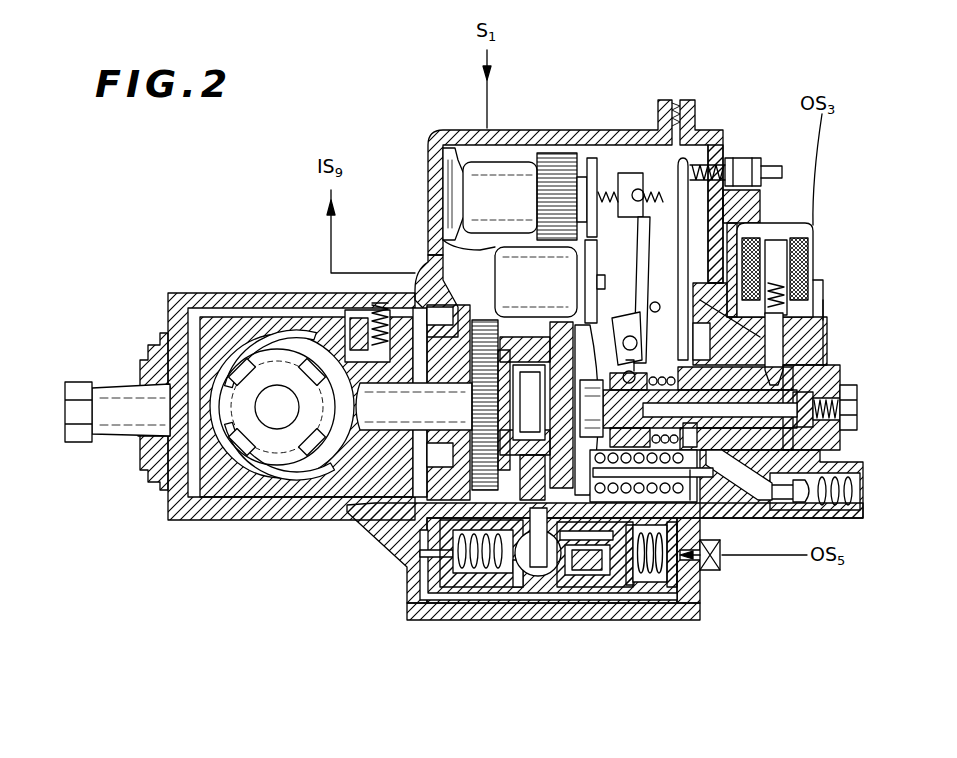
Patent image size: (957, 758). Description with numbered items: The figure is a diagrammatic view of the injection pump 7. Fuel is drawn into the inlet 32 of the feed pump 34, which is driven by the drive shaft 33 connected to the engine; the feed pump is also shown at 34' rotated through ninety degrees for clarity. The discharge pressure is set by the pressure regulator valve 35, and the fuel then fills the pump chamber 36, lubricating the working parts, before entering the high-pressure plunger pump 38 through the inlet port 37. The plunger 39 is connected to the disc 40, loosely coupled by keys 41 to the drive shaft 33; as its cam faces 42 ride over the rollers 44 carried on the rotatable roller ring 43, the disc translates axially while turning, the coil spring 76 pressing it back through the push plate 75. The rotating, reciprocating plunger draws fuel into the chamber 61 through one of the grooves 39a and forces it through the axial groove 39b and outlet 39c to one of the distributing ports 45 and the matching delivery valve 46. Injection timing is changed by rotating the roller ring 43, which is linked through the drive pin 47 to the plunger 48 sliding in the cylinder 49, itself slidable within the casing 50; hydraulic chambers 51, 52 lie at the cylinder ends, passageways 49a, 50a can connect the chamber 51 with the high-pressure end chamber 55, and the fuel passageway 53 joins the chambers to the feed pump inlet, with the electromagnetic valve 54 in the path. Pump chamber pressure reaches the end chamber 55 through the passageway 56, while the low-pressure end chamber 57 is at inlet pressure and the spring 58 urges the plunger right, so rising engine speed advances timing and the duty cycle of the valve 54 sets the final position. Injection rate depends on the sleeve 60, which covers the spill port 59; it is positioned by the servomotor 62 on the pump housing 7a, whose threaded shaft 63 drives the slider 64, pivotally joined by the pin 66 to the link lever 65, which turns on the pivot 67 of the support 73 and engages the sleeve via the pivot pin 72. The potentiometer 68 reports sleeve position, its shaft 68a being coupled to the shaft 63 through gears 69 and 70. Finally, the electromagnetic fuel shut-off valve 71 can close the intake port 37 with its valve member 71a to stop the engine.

The injection pump 7 is at (428, 115).
The pump housing 7a is at (428, 214).
The inlet 32 is at (195, 296).
The drive shaft 33 is at (118, 414).
The feed pump 34 is at (282, 451).
The feed pump rotated through 90 degrees 34' is at (276, 355).
The pressure regulator valve 35 is at (370, 318).
The pump chamber 36 is at (637, 156).
The inlet port 37 is at (828, 334).
The high-pressure plunger pump 38 is at (852, 381).
The plunger 39 is at (840, 450).
The grooves 39a is at (845, 368).
The axial groove 39b is at (762, 330).
The outlet 39c is at (778, 292).
The disc 40 is at (545, 398).
The keys 41 is at (528, 372).
The cam faces 42 is at (565, 332).
The roller ring 43 is at (498, 332).
The rollers 44 is at (390, 526).
The distributing ports 45 is at (745, 470).
The delivery valve 46 is at (858, 495).
The drive pin 47 is at (547, 596).
The plunger 48 is at (583, 608).
The cylinder 49 is at (512, 604).
The passageway 49a is at (628, 600).
The casing 50 is at (493, 612).
The passageway 50a is at (638, 612).
The hydraulic chamber 51 is at (664, 622).
The hydraulic chamber 52 is at (425, 622).
The fuel passageway 53 is at (700, 592).
The electromagnetic valve 54 is at (720, 570).
The high-pressure end chamber 55 is at (702, 617).
The passageway 56 is at (556, 578).
The low-pressure end chamber 57 is at (466, 598).
The spring 58 is at (415, 556).
The spill port 59 is at (688, 408).
The sleeve 60 is at (655, 370).
The chamber 61 is at (838, 424).
The servomotor 62 is at (553, 162).
The threaded shaft 63 is at (582, 176).
The slider 64 is at (622, 172).
The link lever 65 is at (642, 216).
The pin 66 is at (643, 222).
The pivot 67 is at (628, 336).
The potentiometer 68 is at (495, 262).
The shaft 68a is at (575, 282).
The gear 69 is at (597, 226).
The gear 70 is at (597, 262).
The electromagnetic fuel shut-off valve 71 is at (815, 258).
The valve member 71a is at (824, 302).
The pivot pin 72 is at (623, 378).
The support 73 is at (605, 284).
The push plate 75 is at (605, 482).
The coil spring 76 is at (692, 472).